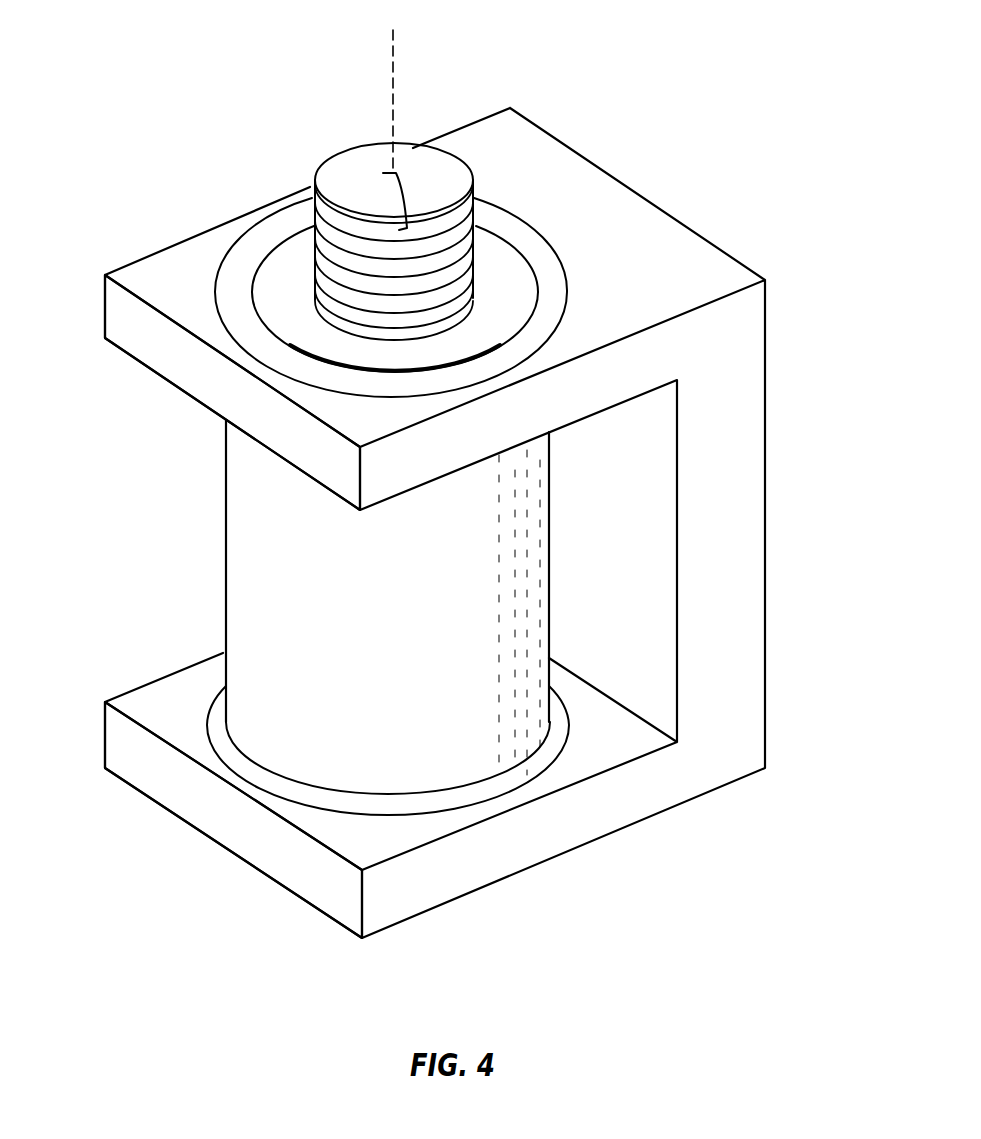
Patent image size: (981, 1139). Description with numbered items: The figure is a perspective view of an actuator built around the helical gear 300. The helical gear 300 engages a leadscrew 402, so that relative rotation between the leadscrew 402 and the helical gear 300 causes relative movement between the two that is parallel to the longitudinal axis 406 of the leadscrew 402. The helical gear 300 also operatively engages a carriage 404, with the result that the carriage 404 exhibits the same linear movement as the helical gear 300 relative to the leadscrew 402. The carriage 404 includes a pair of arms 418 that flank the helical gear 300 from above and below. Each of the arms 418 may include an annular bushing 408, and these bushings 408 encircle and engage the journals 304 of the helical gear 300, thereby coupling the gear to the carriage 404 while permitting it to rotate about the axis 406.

The helical gear 300 is at (237, 562).
The journal 304 is at (500, 247).
The leadscrew 402 is at (353, 158).
The carriage 404 is at (752, 457).
The longitudinal axis 406 is at (393, 73).
The annular bushing 408 is at (557, 293).
The arm 418 is at (117, 320).